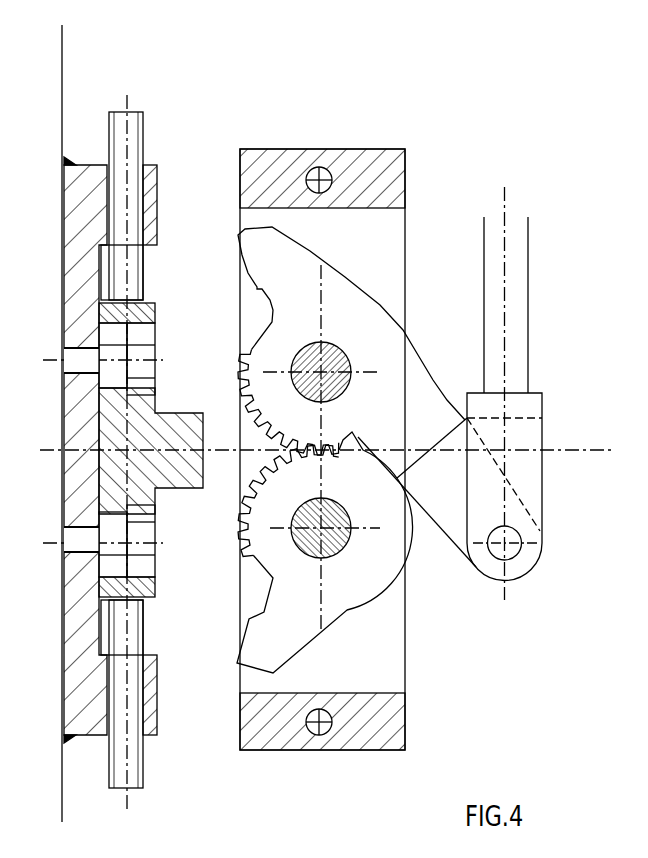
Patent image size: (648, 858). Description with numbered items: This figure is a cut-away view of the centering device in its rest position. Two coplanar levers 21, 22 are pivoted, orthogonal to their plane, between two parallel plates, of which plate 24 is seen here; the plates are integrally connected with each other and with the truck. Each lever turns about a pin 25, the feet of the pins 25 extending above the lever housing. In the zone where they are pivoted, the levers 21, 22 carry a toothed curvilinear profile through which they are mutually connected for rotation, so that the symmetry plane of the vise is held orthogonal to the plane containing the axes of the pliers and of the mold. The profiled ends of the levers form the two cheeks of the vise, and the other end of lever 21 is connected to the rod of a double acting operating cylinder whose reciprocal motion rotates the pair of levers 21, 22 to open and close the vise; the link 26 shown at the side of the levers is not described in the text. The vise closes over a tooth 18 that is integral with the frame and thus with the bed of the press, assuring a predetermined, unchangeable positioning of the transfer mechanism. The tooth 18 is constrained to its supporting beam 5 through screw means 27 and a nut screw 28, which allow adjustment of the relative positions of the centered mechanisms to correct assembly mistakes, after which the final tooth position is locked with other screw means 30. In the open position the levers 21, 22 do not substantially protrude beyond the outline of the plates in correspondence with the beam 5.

The beam 5 is at (124, 423).
The tooth 18 is at (156, 435).
The lever 21 is at (578, 320).
The lever 22 is at (420, 545).
The plate 24 is at (568, 249).
The pin 25 is at (580, 362).
The connecting link 26 is at (573, 478).
The screw means 27 is at (187, 272).
The nut screw 28 is at (177, 214).
The screw means 30 is at (156, 450).